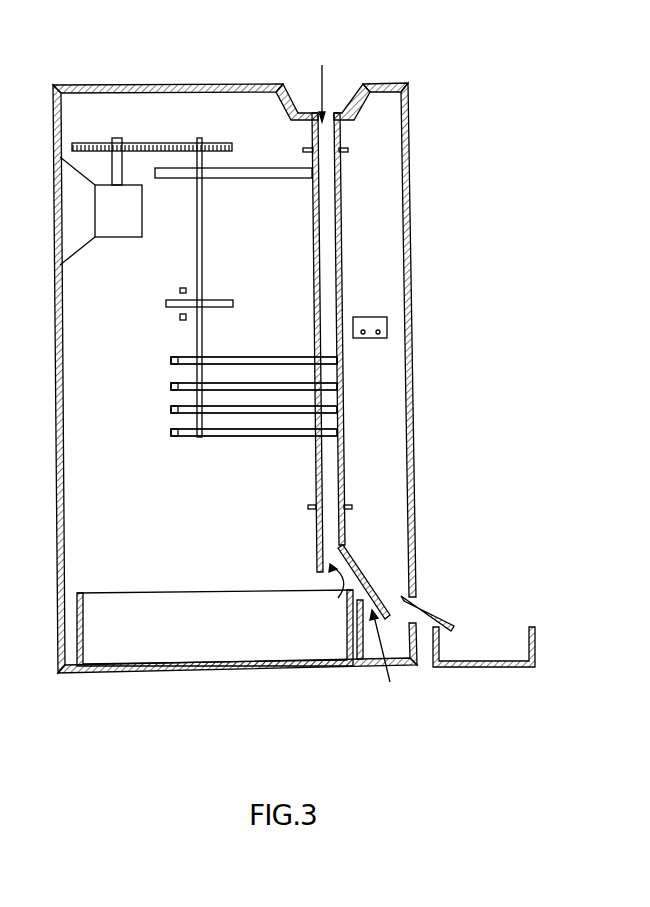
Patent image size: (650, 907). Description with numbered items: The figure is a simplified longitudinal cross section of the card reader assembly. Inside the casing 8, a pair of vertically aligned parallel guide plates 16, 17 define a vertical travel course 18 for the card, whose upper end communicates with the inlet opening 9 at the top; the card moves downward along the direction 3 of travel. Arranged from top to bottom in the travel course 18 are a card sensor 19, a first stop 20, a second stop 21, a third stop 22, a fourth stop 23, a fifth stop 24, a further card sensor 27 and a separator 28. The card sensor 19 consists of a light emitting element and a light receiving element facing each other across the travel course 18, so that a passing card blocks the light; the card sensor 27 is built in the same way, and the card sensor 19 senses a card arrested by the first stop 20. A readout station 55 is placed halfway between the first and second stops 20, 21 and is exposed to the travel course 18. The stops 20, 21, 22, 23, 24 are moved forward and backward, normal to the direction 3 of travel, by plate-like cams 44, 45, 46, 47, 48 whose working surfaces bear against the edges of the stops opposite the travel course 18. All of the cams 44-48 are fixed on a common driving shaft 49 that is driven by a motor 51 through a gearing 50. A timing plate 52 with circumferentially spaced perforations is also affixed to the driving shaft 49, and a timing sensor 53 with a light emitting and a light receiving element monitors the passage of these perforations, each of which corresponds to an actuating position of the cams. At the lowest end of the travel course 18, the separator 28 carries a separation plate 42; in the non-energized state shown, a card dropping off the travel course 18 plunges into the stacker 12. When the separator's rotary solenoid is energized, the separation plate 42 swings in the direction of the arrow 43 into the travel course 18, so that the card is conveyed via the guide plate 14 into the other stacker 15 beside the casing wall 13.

The direction of travel 3 is at (322, 88).
The casing 8 is at (408, 282).
The inlet opening 9 is at (330, 120).
The stacker 12 is at (177, 632).
The housing side wall 13 is at (417, 587).
The guide plate 14 is at (430, 613).
The stacker 15 is at (483, 647).
The guide plate 16 is at (340, 220).
The guide plate 17 is at (312, 248).
The travel course 18 is at (323, 275).
The card sensor 19 is at (312, 150).
The first stop 20 is at (273, 177).
The second stop 21 is at (265, 358).
The third stop 22 is at (328, 383).
The fourth stop 23 is at (328, 407).
The fifth stop 24 is at (328, 433).
The card sensor 27 is at (344, 508).
The separator 28 is at (382, 660).
The separation plate 42 is at (358, 572).
The arrow 43 is at (325, 599).
The cam 44 is at (182, 175).
The cam 45 is at (173, 362).
The cam 46 is at (173, 387).
The cam 47 is at (173, 413).
The cam 48 is at (173, 435).
The driving shaft 49 is at (198, 235).
The gearing 50 is at (133, 142).
The motor 51 is at (114, 223).
The timing plate 52 is at (212, 303).
The timing sensor 53 is at (177, 292).
The readout station 55 is at (392, 328).